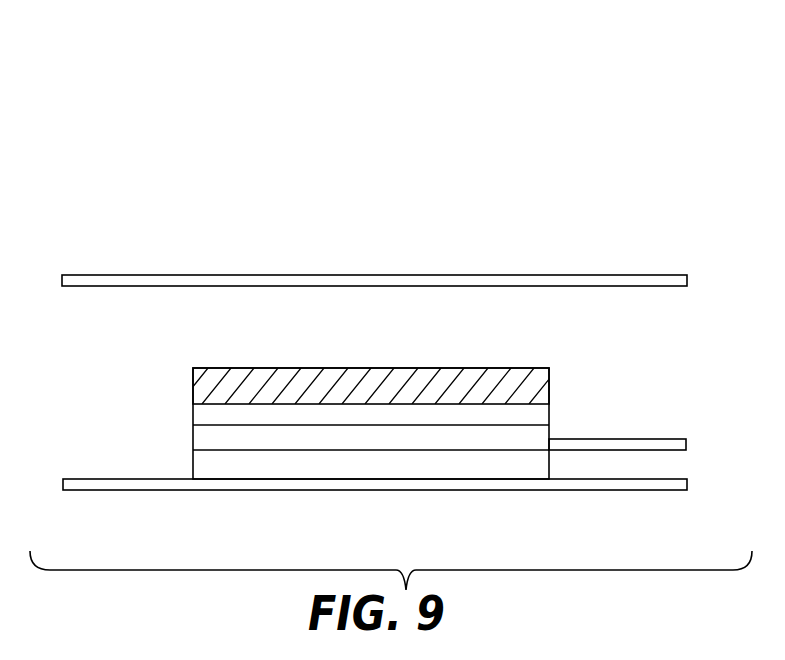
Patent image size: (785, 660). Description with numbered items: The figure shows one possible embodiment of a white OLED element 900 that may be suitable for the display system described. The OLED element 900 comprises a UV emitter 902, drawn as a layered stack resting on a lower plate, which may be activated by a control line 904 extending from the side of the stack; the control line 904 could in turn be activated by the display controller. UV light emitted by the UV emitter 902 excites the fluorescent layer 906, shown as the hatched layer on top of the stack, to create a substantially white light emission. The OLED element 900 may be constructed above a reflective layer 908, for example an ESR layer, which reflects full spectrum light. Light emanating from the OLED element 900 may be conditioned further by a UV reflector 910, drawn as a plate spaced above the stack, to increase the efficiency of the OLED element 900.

The OLED element 900 is at (548, 125).
The UV emitter 902 is at (360, 405).
The control line 904 is at (647, 439).
The fluorescent layer 906 is at (513, 367).
The reflective layer 908 is at (622, 479).
The UV reflector 910 is at (562, 275).